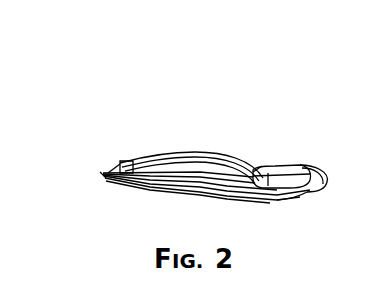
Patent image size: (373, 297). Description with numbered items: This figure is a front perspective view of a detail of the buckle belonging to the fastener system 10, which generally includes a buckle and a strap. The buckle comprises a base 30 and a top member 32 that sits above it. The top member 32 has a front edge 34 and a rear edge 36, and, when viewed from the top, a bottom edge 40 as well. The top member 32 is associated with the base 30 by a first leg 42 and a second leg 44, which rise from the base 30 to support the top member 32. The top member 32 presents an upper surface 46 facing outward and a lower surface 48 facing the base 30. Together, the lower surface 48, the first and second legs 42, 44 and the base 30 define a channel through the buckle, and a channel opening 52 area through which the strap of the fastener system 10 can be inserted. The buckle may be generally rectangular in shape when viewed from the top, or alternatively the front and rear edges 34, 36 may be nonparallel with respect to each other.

The fastener system 10 is at (133, 63).
The base 30 is at (102, 177).
The top member 32 is at (207, 148).
The front edge 34 is at (229, 198).
The rear edge 36 is at (290, 168).
The bottom edge 40 is at (293, 199).
The first leg 42 is at (121, 164).
The second leg 44 is at (314, 167).
The upper surface 46 is at (235, 152).
The lower surface 48 is at (191, 198).
The channel opening 52 is at (176, 172).